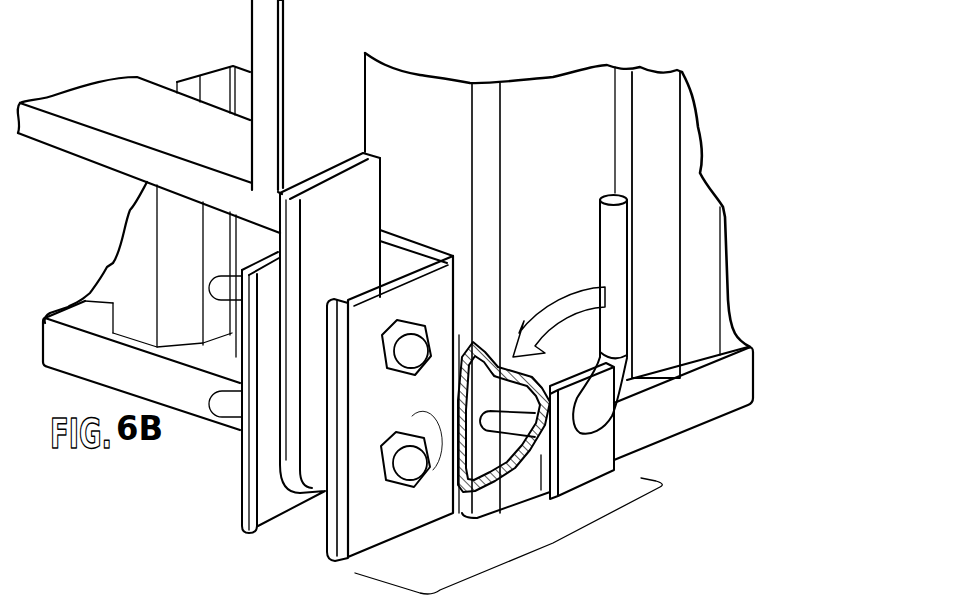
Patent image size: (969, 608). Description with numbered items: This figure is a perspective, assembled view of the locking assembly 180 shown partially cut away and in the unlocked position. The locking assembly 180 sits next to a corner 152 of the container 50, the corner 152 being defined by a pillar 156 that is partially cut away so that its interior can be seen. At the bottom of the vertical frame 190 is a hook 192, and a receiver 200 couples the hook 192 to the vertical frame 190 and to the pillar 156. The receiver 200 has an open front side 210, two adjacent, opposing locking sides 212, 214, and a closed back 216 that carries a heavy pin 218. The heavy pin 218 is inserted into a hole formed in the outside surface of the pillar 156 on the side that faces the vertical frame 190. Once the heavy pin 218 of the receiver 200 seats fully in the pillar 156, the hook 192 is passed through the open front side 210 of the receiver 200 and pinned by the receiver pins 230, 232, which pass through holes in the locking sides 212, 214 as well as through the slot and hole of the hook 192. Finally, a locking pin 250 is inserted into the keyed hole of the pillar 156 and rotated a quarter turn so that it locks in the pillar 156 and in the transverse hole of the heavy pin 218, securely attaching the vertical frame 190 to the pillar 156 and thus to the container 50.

The container 50 is at (539, 118).
The corner 152 is at (646, 447).
The pillar 156 is at (428, 122).
The locking assembly 180 is at (553, 543).
The vertical frame 190 is at (247, 56).
The hook 192 is at (287, 452).
The receiver 200 is at (239, 507).
The open front side 210 is at (324, 540).
The locking side 212 is at (405, 514).
The locking side 214 is at (272, 500).
The closed back 216 is at (397, 258).
The heavy pin 218 is at (490, 400).
The receiver pin 230 is at (414, 350).
The receiver pin 232 is at (410, 467).
The locking pin 250 is at (598, 473).